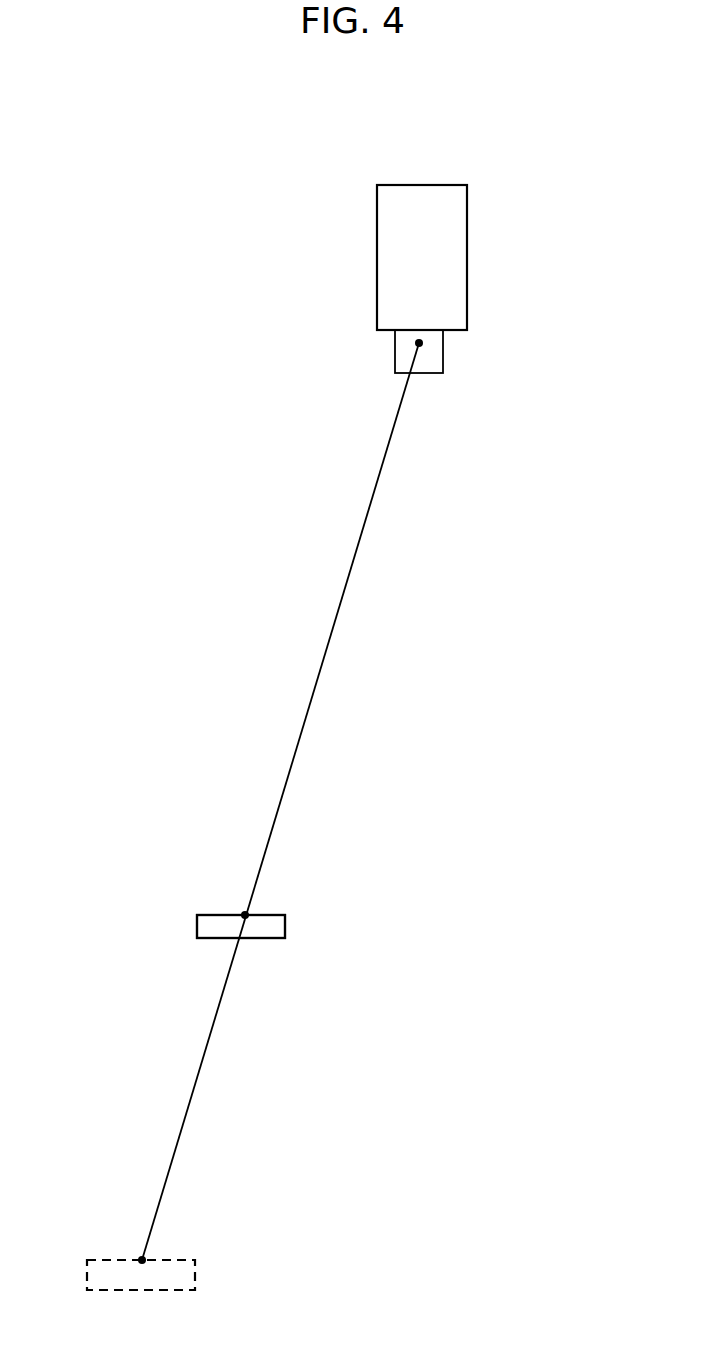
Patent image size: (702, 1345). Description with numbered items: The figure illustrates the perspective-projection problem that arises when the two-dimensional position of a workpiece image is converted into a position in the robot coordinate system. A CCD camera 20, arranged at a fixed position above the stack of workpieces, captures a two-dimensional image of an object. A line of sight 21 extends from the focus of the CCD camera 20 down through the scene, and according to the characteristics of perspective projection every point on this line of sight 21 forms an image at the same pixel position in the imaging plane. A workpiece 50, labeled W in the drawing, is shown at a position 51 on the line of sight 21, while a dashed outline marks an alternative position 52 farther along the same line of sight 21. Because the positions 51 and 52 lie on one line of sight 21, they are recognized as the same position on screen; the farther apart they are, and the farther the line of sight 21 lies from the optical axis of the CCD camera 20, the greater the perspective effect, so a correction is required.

The CCD camera 20 is at (477, 280).
The line of sight 21 is at (357, 587).
The workpiece 50 is at (255, 908).
The position 51 is at (307, 927).
The workpiece W is at (212, 928).
The position 52 is at (212, 1272).